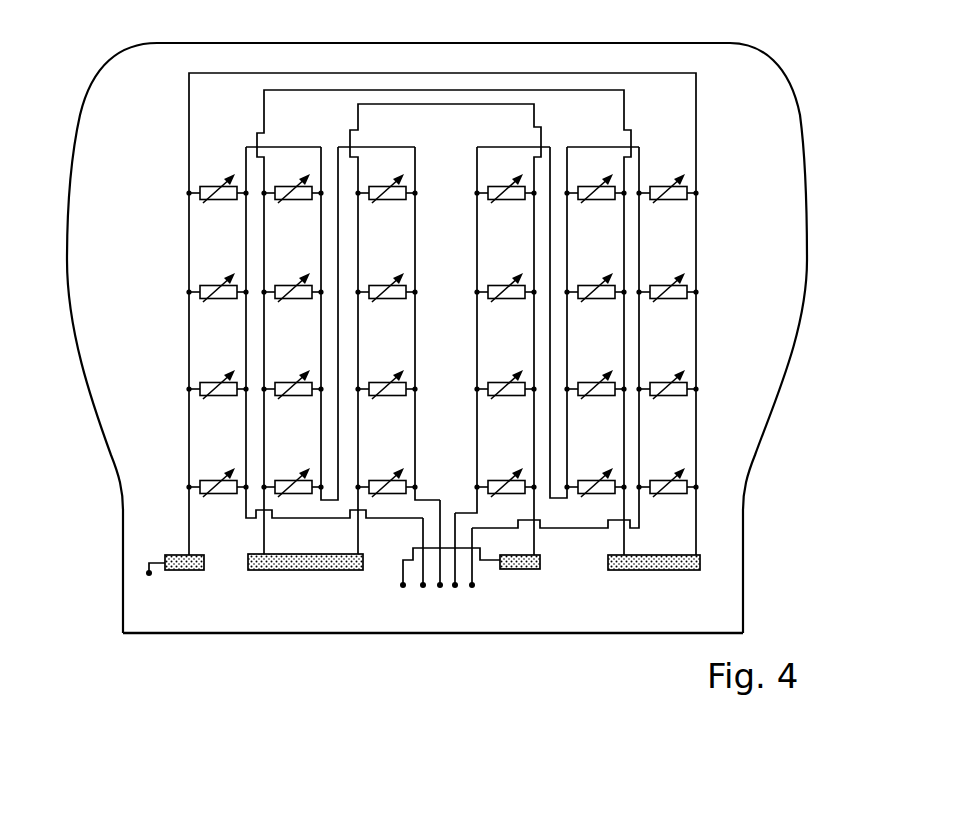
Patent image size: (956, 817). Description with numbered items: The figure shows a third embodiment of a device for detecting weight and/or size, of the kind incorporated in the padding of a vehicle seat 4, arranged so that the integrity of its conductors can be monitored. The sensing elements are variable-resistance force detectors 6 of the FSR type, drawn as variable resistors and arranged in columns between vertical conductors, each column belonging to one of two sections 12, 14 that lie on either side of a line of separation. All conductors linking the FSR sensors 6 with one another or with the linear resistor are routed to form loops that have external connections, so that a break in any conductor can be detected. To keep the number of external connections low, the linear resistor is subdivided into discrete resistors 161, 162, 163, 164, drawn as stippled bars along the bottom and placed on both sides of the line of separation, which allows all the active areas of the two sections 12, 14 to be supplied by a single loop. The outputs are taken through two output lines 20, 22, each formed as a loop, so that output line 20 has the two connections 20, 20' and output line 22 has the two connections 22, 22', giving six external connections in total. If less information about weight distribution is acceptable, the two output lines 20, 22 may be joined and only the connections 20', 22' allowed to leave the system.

The seat 4 is at (134, 294).
The variable-resistance force detector 6 is at (217, 463).
The section 12 is at (261, 640).
The section 14 is at (605, 640).
The discrete resistor 161 is at (183, 572).
The discrete resistor 162 is at (662, 571).
The discrete resistor 163 is at (305, 571).
The discrete resistor 164 is at (526, 570).
The output line 20 is at (420, 591).
The connection 20' is at (381, 600).
The output line 22 is at (471, 597).
The connection 22' is at (508, 605).